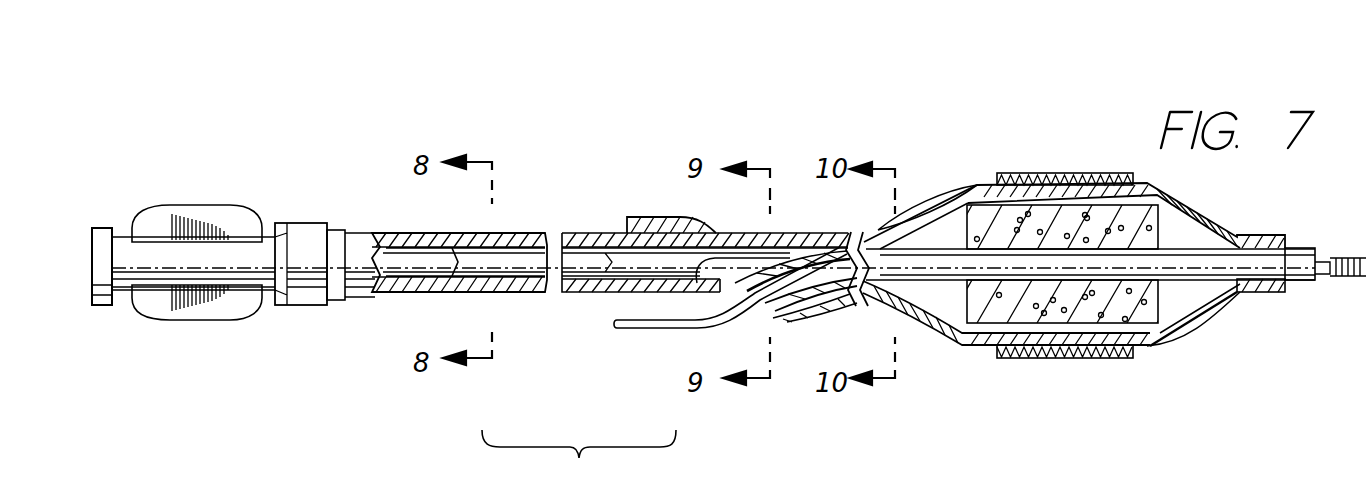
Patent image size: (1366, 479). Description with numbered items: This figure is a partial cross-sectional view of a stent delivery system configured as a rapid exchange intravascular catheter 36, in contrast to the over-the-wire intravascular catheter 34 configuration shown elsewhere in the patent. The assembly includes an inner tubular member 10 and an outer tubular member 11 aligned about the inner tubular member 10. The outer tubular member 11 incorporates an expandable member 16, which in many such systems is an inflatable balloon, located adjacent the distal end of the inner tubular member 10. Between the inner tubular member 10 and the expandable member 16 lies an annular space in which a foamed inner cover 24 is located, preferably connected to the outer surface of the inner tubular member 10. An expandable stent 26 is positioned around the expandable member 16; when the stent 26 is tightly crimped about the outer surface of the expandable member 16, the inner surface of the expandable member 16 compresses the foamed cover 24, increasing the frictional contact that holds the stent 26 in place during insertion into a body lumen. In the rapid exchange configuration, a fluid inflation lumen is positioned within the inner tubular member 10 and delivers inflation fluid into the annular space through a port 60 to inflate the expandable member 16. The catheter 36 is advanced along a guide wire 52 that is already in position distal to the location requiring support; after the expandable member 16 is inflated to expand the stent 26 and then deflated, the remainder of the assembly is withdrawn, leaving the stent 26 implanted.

The inner tubular member 10 is at (953, 240).
The outer tubular member 11 is at (518, 292).
The expandable member 16 is at (957, 210).
The foamed inner cover 24 is at (1137, 350).
The expandable stent 26 is at (1033, 360).
The over-the-wire intravascular catheter 34 is at (637, 262).
The rapid exchange intravascular catheter 36 is at (218, 257).
The guide wire 52 is at (652, 325).
The port 60 is at (878, 210).